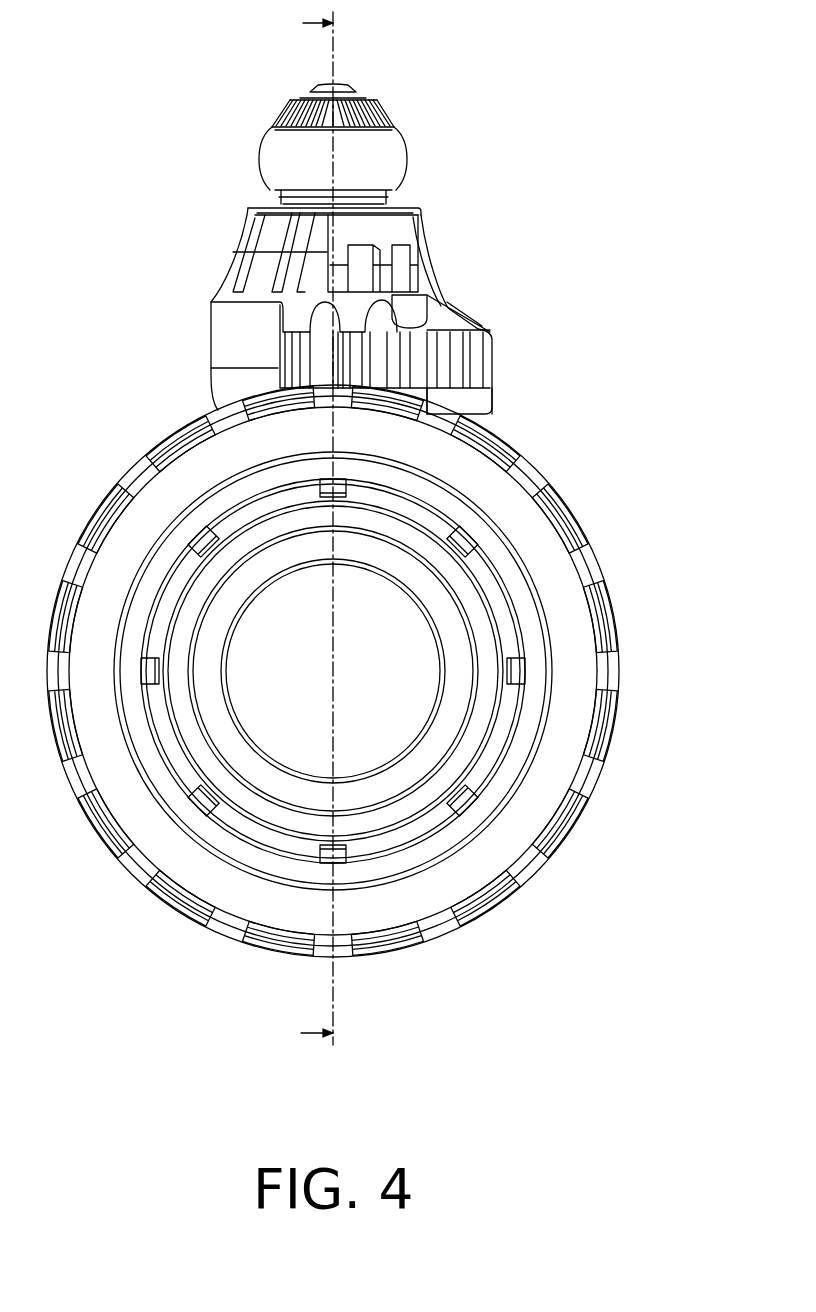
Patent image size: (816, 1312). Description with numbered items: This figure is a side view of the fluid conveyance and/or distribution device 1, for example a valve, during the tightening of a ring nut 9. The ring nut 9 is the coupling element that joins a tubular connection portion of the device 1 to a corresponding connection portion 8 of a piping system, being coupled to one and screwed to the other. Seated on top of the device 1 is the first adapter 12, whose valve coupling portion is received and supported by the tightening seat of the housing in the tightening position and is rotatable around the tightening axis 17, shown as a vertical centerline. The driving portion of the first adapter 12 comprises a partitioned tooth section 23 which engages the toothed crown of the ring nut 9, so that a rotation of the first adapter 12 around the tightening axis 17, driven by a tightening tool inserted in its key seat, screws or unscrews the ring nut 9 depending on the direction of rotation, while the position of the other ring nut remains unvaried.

The fluid conveyance and/or distribution device 1 is at (578, 456).
The tightening axis 17 is at (333, 57).
The first adapter 12 is at (453, 290).
The partitioned tooth section 23 is at (492, 368).
The ring nut 9 is at (370, 670).
The connection portion 8 is at (411, 671).